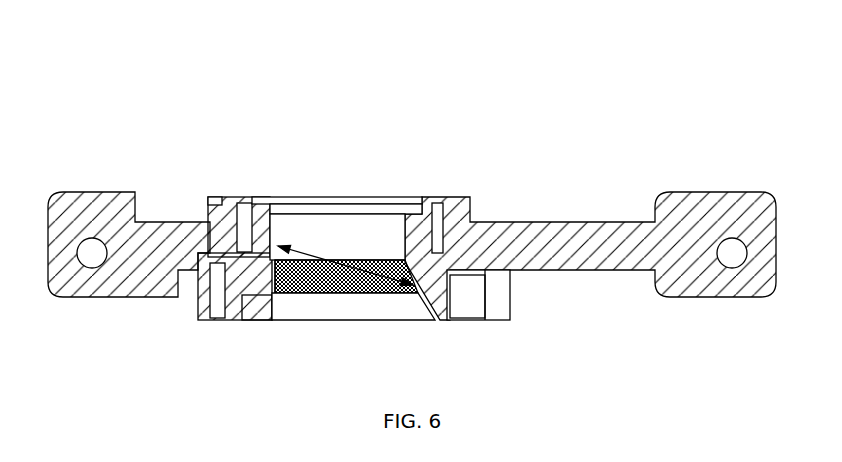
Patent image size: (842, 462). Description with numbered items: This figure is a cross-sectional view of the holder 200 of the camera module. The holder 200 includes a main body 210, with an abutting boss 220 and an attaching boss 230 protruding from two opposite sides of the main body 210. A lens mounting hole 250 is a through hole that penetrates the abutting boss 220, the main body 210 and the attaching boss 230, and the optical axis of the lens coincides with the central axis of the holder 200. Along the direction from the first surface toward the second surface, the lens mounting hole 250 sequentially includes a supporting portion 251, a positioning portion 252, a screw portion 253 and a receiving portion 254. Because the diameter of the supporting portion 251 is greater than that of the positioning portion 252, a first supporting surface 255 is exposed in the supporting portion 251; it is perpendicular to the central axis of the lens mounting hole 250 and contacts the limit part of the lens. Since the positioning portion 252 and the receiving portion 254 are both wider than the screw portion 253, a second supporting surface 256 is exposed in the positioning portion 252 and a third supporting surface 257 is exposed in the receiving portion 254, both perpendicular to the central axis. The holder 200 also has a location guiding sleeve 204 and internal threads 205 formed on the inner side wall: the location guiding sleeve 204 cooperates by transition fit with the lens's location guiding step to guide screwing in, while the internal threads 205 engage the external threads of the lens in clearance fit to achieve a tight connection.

The holder 200 is at (90, 63).
The main body 210 is at (594, 248).
The abutting boss 220 is at (222, 215).
The attaching boss 230 is at (245, 302).
The location guiding sleeve 204 is at (308, 294).
The internal threads 205 is at (425, 315).
The lens mounting hole 250 is at (398, 200).
The supporting portion 251 is at (410, 217).
The positioning portion 252 is at (385, 232).
The screw portion 253 is at (368, 308).
The receiving portion 254 is at (338, 305).
The first supporting surface 255 is at (260, 215).
The second supporting surface 256 is at (407, 258).
The third supporting surface 257 is at (273, 293).